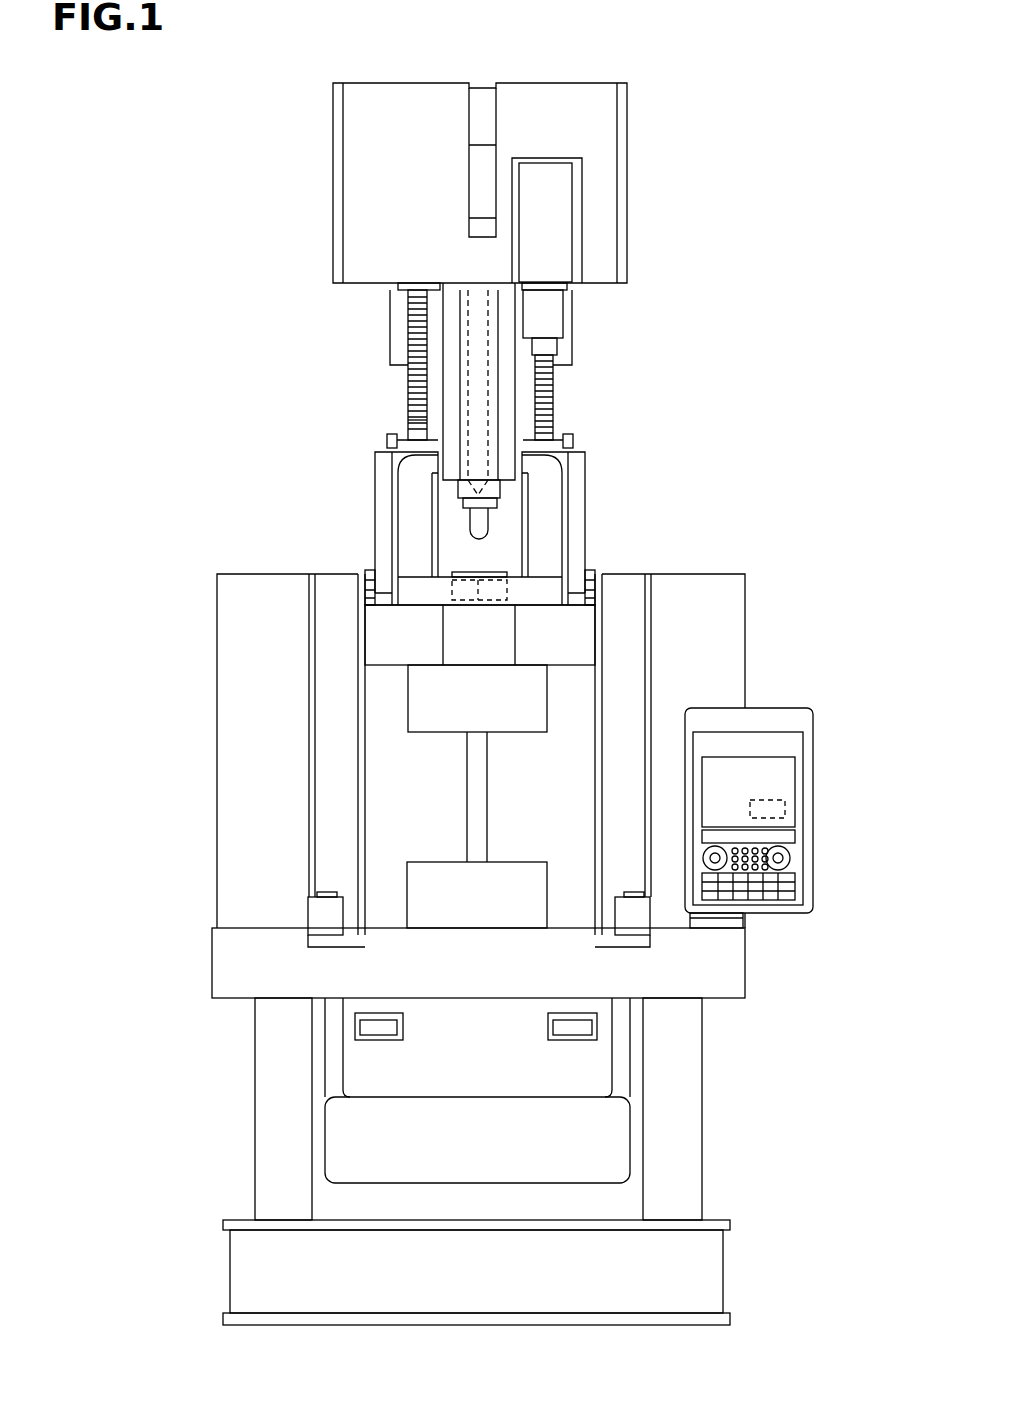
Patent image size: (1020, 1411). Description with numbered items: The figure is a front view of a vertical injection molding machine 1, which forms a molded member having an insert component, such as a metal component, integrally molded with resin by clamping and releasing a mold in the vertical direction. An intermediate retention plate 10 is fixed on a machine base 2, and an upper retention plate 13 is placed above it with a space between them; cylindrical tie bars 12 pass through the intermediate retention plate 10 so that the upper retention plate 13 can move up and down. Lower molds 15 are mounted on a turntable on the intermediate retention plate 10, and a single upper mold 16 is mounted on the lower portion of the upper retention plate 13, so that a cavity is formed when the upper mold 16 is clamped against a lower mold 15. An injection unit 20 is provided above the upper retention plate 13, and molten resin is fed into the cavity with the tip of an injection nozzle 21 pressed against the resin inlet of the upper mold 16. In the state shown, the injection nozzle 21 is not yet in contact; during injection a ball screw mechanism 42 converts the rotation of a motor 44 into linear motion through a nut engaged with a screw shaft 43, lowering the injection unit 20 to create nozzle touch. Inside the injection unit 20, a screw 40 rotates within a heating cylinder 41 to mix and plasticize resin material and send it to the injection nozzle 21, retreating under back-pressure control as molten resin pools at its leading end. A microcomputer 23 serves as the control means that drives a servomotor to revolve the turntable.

The vertical injection molding machine 1 is at (713, 128).
The machine base 2 is at (678, 1097).
The intermediate retention plate 10 is at (728, 967).
The tie bars 12 is at (485, 789).
The upper retention plate 13 is at (557, 630).
The lower molds 15 is at (467, 897).
The upper mold 16 is at (532, 691).
The injection unit 20 is at (527, 363).
The injection nozzle 21 is at (478, 520).
The microcomputer 23 is at (796, 813).
The screw 40 is at (497, 315).
The heating cylinder 41 is at (450, 365).
The ball screw mechanism 42 is at (399, 397).
The screw shaft 43 is at (418, 425).
The motor 44 is at (548, 316).